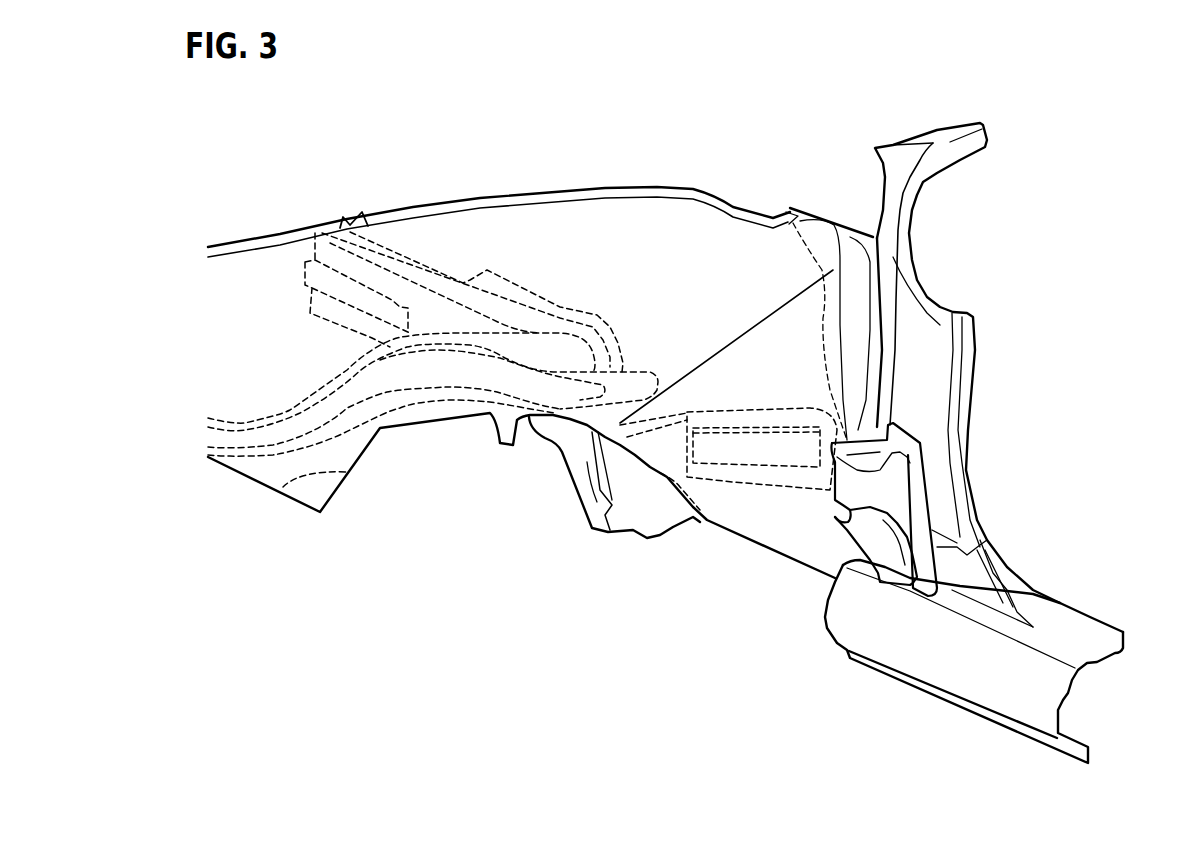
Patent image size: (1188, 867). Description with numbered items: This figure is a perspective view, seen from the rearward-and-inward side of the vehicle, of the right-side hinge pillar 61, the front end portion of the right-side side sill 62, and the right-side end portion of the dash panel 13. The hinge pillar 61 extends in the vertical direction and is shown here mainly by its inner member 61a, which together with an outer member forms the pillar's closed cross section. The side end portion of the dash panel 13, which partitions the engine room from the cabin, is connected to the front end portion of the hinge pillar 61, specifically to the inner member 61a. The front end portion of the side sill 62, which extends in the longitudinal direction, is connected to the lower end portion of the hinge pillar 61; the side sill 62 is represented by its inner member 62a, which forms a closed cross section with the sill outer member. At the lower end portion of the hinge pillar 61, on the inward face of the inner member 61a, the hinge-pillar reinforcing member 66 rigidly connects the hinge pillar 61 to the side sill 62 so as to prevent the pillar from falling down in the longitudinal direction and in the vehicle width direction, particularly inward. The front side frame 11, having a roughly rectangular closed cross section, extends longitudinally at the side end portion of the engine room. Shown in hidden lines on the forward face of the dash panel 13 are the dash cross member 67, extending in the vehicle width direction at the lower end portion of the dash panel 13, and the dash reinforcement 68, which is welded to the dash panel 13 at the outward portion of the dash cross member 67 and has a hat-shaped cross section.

The dash panel 13 is at (658, 230).
The dash cross member 67 is at (427, 370).
The front side frame 11 is at (570, 435).
The dash reinforcement 68 is at (745, 447).
The hinge pillar 61 is at (999, 377).
The inner member 61a is at (925, 373).
The hinge-pillar reinforcing member 66 is at (887, 492).
The side sill 62 is at (1002, 647).
The inner member 62a is at (1068, 650).